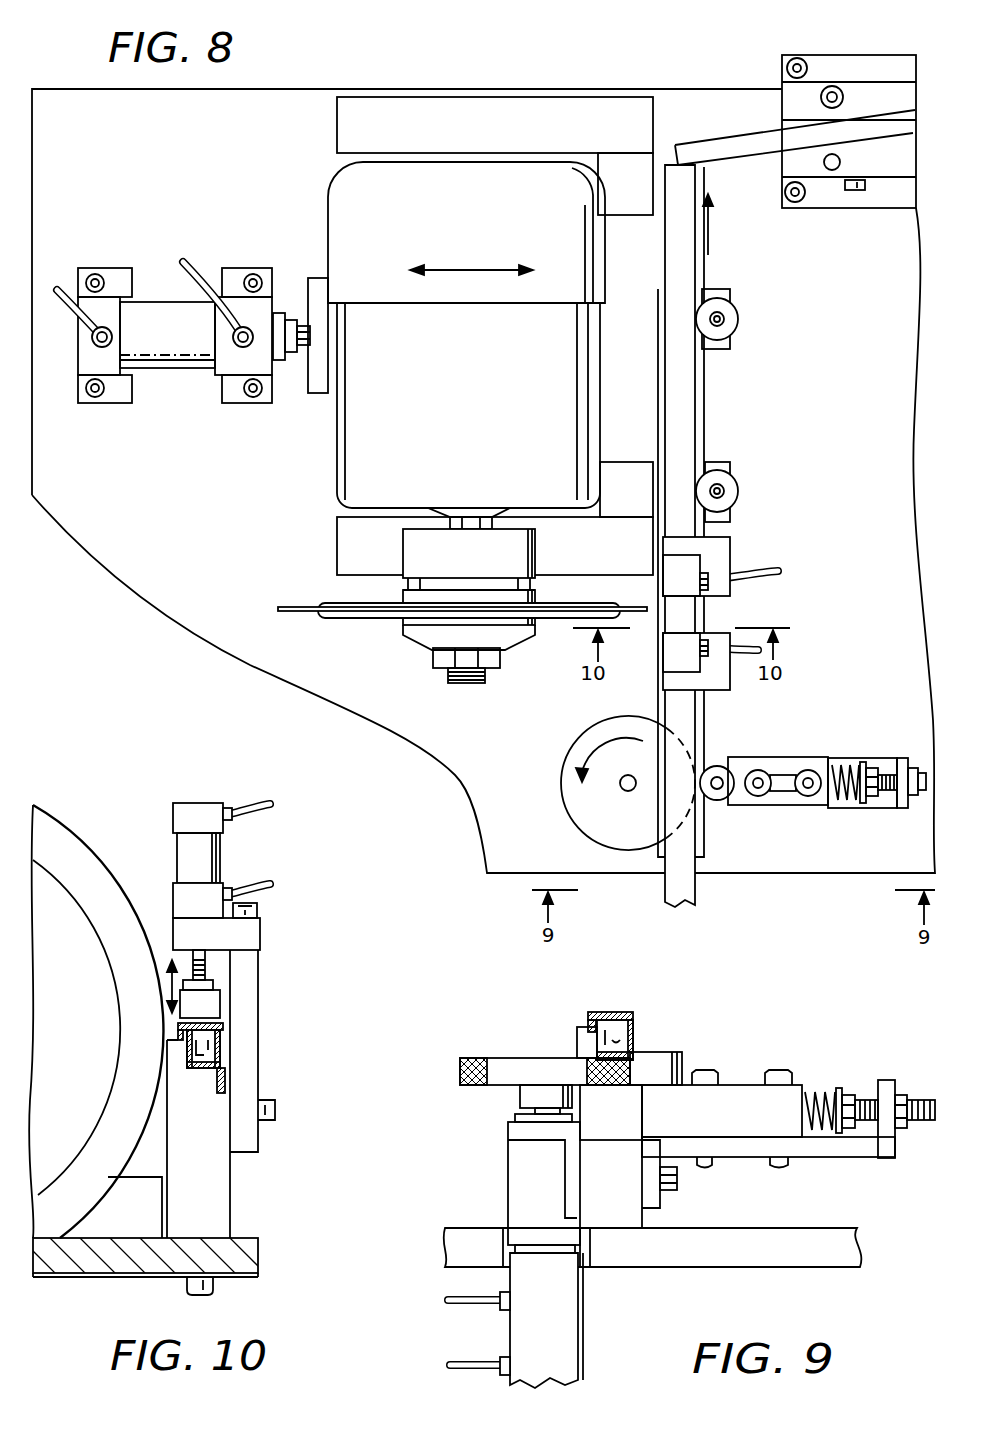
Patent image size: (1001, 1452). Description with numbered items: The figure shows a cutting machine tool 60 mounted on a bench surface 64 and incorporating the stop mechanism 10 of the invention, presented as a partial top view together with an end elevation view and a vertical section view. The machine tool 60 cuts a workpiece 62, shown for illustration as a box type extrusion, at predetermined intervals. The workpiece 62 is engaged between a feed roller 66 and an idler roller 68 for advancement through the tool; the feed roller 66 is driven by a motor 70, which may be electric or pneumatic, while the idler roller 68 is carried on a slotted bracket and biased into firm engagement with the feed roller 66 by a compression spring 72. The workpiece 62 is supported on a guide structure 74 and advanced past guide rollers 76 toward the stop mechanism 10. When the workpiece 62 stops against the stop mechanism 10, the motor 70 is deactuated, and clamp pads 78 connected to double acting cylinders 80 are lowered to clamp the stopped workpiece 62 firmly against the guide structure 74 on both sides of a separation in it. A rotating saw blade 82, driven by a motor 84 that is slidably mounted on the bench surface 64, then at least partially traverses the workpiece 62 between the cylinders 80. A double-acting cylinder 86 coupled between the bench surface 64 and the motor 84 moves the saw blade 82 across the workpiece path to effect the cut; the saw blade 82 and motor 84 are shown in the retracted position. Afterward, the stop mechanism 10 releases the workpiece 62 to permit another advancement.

In FIG. 8, the stop mechanism 10 is at (865, 56).
In FIG. 8, the machine tool 60 is at (492, 76).
In FIG. 8, the workpiece 62 is at (687, 888).
In FIG. 10, the workpiece 62 is at (224, 1047).
In FIG. 9, the workpiece 62 is at (623, 1013).
In FIG. 8, the bench surface 64 is at (812, 325).
In FIG. 10, the bench surface 64 is at (245, 1240).
In FIG. 9, the bench surface 64 is at (775, 1237).
In FIG. 8, the feed roller 66 is at (585, 793).
In FIG. 9, the feed roller 66 is at (513, 1068).
In FIG. 8, the idler roller 68 is at (719, 774).
In FIG. 9, the idler roller 68 is at (665, 1065).
In FIG. 9, the motor 70 is at (565, 1300).
In FIG. 8, the compression spring 72 is at (840, 765).
In FIG. 9, the compression spring 72 is at (815, 1090).
In FIG. 8, the guide structure 74 is at (658, 687).
In FIG. 10, the guide structure 74 is at (175, 1148).
In FIG. 9, the guide structure 74 is at (575, 1040).
In FIG. 8, the guide rollers 76 is at (730, 326).
In FIG. 10, the clamp pads 78 is at (207, 1003).
In FIG. 8, the double acting cylinders 80 is at (688, 568).
In FIG. 10, the double acting cylinders 80 is at (205, 862).
In FIG. 8, the saw blade 82 is at (304, 613).
In FIG. 10, the saw blade 82 is at (67, 847).
In FIG. 8, the motor 84 is at (446, 376).
In FIG. 8, the double-acting cylinder 86 is at (170, 345).